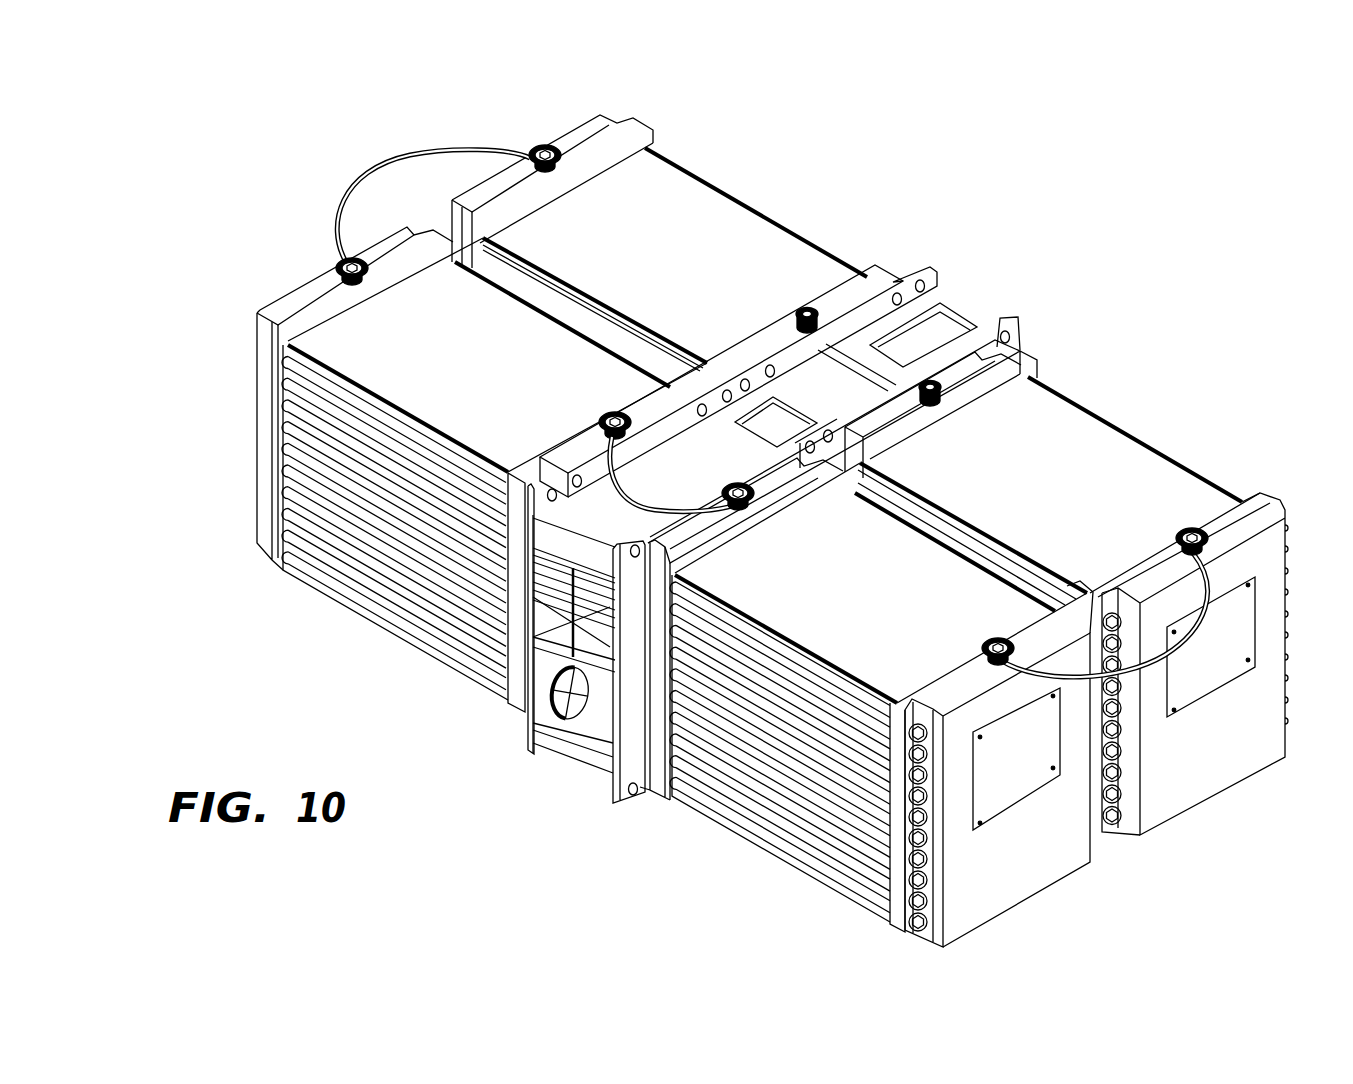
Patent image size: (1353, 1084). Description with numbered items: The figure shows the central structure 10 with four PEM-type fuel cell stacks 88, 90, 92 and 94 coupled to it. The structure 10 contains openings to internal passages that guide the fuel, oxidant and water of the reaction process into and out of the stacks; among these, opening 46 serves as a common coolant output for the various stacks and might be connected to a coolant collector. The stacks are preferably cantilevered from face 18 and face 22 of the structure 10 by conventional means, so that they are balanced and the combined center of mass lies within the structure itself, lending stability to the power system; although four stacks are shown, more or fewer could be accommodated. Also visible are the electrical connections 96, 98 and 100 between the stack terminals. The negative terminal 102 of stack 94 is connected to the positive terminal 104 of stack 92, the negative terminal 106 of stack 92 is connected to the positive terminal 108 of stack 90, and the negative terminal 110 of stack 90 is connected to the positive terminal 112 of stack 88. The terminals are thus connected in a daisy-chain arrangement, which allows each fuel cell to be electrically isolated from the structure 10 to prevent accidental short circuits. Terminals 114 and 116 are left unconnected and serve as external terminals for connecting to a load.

The structure 10 is at (1033, 266).
The face 18 is at (626, 795).
The face 22 is at (533, 752).
The opening 46 is at (558, 703).
The fuel cell stack 88 is at (724, 217).
The fuel cell stack 90 is at (262, 555).
The fuel cell stack 92 is at (1020, 874).
The fuel cell stack 94 is at (1212, 765).
The electrical connection 96 is at (1145, 670).
The electrical connection 98 is at (636, 503).
The electrical connection 100 is at (370, 177).
The negative terminal 102 is at (1180, 536).
The positive terminal 104 is at (990, 648).
The negative terminal 106 is at (750, 500).
The positive terminal 108 is at (608, 418).
The negative terminal 110 is at (337, 280).
The positive terminal 112 is at (538, 147).
The terminal 114 is at (800, 312).
The terminal 116 is at (942, 400).